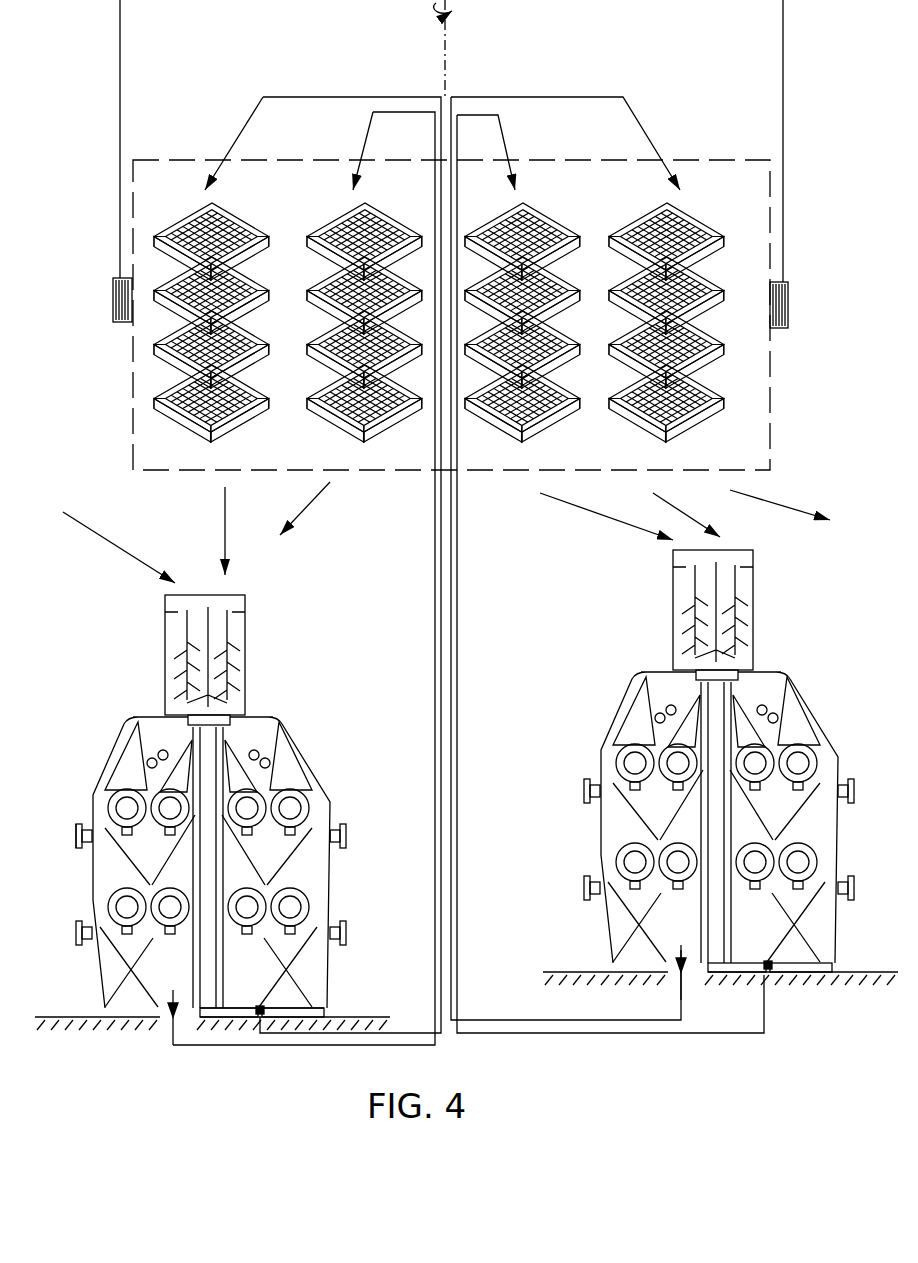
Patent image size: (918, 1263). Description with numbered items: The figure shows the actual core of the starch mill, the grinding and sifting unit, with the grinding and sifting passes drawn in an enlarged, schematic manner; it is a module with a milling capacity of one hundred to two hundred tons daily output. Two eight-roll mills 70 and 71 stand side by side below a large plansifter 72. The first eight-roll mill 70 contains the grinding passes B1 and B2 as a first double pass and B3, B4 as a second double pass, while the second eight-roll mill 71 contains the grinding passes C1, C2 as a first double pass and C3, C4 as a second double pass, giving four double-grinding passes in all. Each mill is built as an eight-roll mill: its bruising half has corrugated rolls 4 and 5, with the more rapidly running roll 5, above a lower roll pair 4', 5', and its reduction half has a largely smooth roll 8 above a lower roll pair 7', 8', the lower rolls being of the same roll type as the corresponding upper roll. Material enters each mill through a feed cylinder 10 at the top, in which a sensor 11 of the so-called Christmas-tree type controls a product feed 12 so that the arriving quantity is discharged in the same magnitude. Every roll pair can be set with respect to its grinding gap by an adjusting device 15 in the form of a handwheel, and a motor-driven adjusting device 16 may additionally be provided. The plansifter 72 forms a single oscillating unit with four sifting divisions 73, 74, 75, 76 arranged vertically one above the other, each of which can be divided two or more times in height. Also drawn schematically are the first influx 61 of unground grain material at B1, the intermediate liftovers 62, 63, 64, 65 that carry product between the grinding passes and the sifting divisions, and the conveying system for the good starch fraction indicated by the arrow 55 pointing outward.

The corrugated roll 4 is at (107, 832).
The lower roll 4' is at (116, 925).
The corrugated roll 5 is at (91, 813).
The lower roll 5' is at (85, 906).
The lower roll 7' is at (755, 895).
The smooth roll 8 is at (812, 746).
The lower roll 8' is at (828, 895).
The feed cylinder 10 is at (228, 639).
The sensor 11 is at (182, 680).
The product feed 12 is at (778, 718).
The adjusting device 15 is at (350, 836).
The motor-driven adjusting device 16 is at (148, 995).
The arrow 55 is at (767, 501).
The first influx 61 is at (121, 549).
The intermediate liftover 62 is at (365, 146).
The intermediate liftover 63 is at (236, 142).
The intermediate liftover 64 is at (656, 150).
The intermediate liftover 65 is at (505, 152).
The eight-roll mill 70 is at (110, 748).
The eight-roll mill 71 is at (612, 702).
The plansifter 72 is at (786, 352).
The sifting division 73 is at (238, 216).
The sifting division 74 is at (377, 216).
The sifting division 75 is at (545, 215).
The sifting division 76 is at (691, 220).
The grinding pass B1 is at (114, 767).
The grinding pass B2 is at (126, 860).
The grinding pass B3 is at (312, 778).
The grinding pass B4 is at (314, 874).
The grinding pass C1 is at (622, 733).
The grinding pass C2 is at (620, 829).
The grinding pass C3 is at (805, 733).
The grinding pass C4 is at (804, 824).